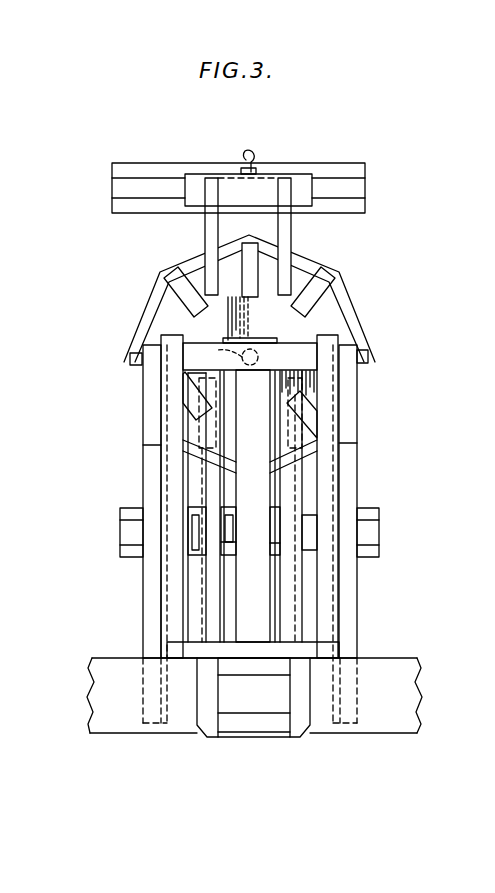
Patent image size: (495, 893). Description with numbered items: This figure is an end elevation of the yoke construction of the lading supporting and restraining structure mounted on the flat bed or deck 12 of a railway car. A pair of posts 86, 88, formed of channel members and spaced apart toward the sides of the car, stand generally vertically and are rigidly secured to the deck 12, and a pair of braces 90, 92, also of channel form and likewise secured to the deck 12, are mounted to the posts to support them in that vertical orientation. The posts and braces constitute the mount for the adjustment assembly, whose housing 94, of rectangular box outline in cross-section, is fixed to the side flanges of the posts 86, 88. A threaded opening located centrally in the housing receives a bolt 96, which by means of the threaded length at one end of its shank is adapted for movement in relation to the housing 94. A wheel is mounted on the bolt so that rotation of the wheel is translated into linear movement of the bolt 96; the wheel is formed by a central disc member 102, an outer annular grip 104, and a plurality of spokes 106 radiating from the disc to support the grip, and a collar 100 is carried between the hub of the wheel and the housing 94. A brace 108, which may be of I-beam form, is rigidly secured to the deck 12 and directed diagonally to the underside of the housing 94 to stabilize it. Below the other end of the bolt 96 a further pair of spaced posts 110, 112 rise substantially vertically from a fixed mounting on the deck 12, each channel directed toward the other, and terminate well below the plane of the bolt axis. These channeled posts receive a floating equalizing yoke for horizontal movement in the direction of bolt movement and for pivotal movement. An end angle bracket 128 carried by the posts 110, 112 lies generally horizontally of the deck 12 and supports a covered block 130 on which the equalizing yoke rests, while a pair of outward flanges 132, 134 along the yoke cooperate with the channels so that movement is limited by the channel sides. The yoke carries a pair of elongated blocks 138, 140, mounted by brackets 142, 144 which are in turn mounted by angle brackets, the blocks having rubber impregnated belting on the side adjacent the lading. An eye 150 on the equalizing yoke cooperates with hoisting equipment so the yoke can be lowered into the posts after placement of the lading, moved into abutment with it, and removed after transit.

The deck 12 is at (408, 678).
The post 86 is at (325, 615).
The post 88 is at (175, 580).
The brace 90 is at (363, 455).
The brace 92 is at (152, 480).
The housing 94 is at (298, 360).
The bolt 96 is at (224, 318).
The collar 100 is at (250, 349).
The central disc member 102 is at (183, 373).
The outer annular grip 104 is at (313, 262).
The spokes 106 is at (180, 290).
The brace 108 is at (260, 482).
The post 110 is at (292, 502).
The post 112 is at (207, 533).
The end angle bracket 128 is at (227, 567).
The block 130 is at (273, 543).
The outward flange 132 is at (292, 228).
The outward flange 134 is at (206, 228).
The block 138 is at (338, 163).
The block 140 is at (370, 548).
The bracket 142 is at (347, 190).
The bracket 144 is at (128, 532).
The eye 150 is at (255, 155).